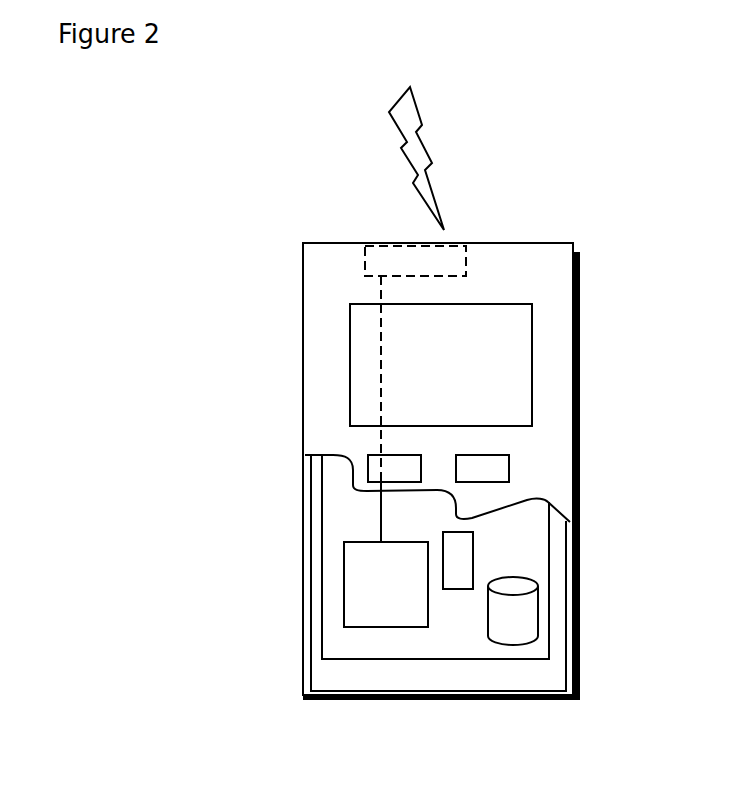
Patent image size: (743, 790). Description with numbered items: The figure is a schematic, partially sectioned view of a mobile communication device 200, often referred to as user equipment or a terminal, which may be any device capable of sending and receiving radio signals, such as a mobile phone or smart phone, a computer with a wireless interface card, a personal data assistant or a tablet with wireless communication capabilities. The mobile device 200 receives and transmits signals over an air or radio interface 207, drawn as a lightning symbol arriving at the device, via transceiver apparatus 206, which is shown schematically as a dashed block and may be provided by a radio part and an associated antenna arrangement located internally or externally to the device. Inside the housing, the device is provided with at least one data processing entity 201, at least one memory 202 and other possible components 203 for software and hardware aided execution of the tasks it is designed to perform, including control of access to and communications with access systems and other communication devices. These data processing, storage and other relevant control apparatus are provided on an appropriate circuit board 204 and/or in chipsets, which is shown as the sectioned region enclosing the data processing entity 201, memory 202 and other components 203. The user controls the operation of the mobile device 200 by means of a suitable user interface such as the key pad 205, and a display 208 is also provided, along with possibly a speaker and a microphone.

The communication device 200 is at (305, 281).
The data processing entity 201 is at (350, 570).
The memory 202 is at (507, 620).
The other possible components 203 is at (458, 547).
The circuit board 204 is at (343, 644).
The key pad 205 is at (367, 467).
The transceiver apparatus 206 is at (457, 256).
The air or radio interface 207 is at (447, 177).
The display 208 is at (363, 353).